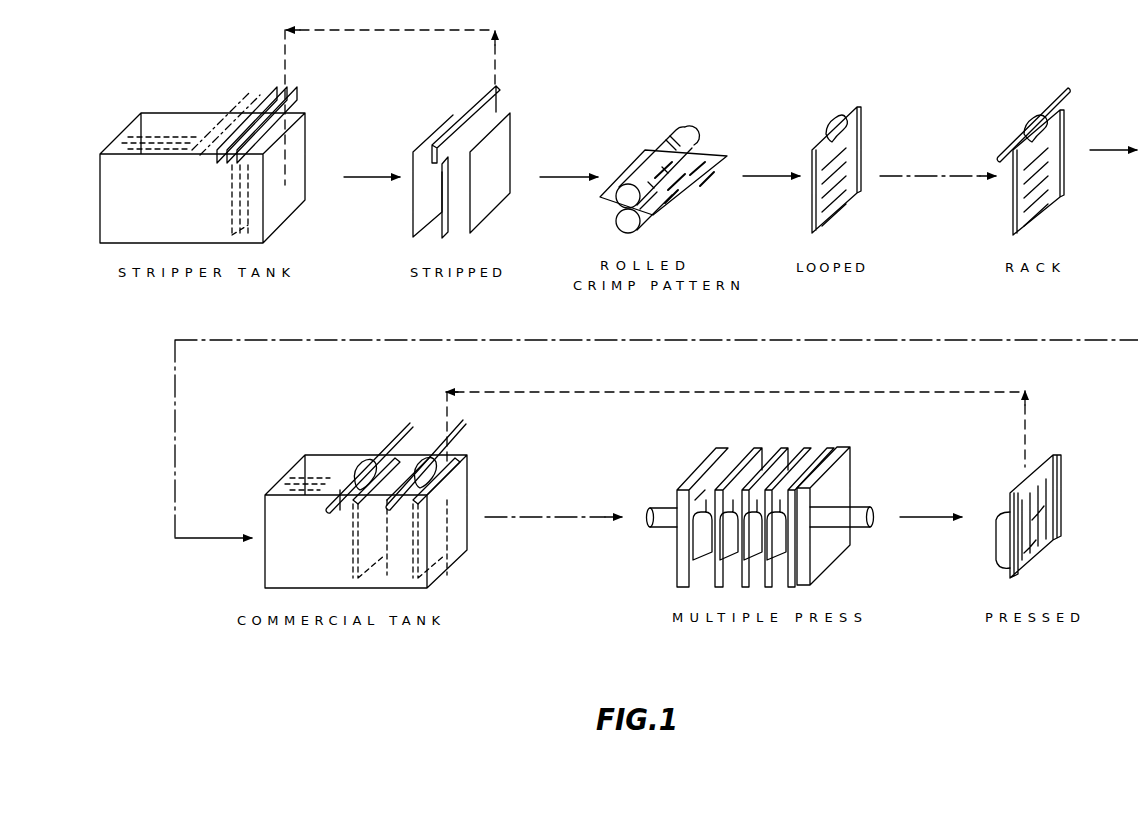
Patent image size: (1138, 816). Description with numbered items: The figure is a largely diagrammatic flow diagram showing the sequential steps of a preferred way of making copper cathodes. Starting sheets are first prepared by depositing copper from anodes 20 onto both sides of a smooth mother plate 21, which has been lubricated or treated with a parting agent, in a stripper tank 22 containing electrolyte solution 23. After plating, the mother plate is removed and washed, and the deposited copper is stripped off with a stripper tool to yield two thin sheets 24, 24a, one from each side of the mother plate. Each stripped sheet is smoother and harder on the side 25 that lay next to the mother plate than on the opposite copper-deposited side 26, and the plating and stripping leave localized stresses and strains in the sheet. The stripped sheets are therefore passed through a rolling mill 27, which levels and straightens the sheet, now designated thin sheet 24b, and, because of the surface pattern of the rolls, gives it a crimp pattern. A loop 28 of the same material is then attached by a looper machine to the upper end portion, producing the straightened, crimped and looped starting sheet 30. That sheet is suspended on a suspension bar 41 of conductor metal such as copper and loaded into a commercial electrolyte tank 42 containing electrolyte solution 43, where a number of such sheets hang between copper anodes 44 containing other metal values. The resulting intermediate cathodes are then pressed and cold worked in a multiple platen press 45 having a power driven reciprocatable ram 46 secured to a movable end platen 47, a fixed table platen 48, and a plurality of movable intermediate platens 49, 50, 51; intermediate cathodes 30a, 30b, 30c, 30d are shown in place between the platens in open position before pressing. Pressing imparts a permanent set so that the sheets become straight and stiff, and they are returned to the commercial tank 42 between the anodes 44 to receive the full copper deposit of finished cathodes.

The anodes 20 is at (278, 92).
The mother plate 21 is at (292, 94).
The stripper tank 22 is at (108, 191).
The electrolyte solution 23 is at (141, 140).
The thin sheet 24 is at (508, 133).
The thin sheet 24a is at (433, 138).
The straightened thin sheet 24b is at (716, 160).
The smooth side 25 is at (420, 193).
The copper-deposited side 26 is at (503, 150).
The rolling mill 27 is at (703, 142).
The loop 28 is at (843, 112).
The starting sheet 30 is at (858, 147).
The intermediate cathode 30a is at (778, 578).
The intermediate cathode 30b is at (758, 568).
The intermediate cathode 30c is at (734, 568).
The intermediate cathode 30d is at (706, 568).
The suspension bar 41 is at (1060, 92).
The commercial electrolyte tank 42 is at (265, 562).
The electrolyte solution 43 is at (300, 484).
The copper anodes 44 is at (440, 445).
The multiple platen press 45 is at (672, 576).
The ram 46 is at (858, 513).
The movable end platen 47 is at (852, 461).
The fixed table platen 48 is at (736, 468).
The movable intermediate platen 49 is at (800, 465).
The movable intermediate platen 50 is at (777, 460).
The movable intermediate platen 51 is at (754, 458).